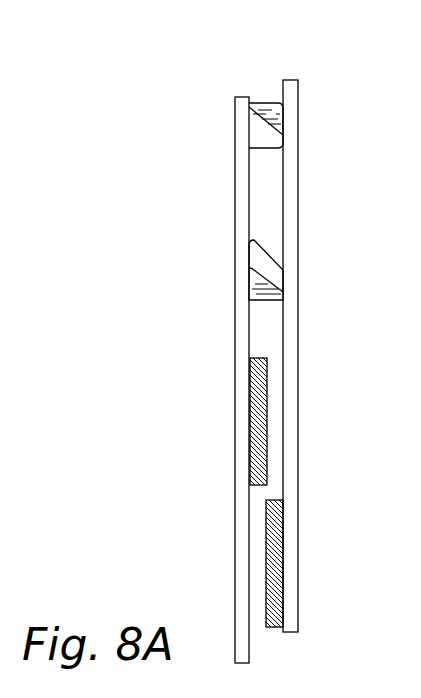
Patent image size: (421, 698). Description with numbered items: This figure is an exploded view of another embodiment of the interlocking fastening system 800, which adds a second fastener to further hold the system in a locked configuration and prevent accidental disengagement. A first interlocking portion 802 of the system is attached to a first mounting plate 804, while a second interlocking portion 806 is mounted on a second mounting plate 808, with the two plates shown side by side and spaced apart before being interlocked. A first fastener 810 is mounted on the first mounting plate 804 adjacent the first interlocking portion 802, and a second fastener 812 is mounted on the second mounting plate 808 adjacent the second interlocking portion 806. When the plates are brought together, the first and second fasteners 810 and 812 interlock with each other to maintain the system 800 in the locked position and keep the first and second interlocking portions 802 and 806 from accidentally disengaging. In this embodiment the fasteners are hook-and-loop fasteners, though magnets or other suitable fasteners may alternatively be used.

The interlocking fastening system 800 is at (261, 66).
The first interlocking portion 802 is at (262, 138).
The first mounting plate 804 is at (235, 195).
The second interlocking portion 806 is at (271, 268).
The second mounting plate 808 is at (292, 341).
The first fastener 810 is at (250, 427).
The second fastener 812 is at (273, 628).